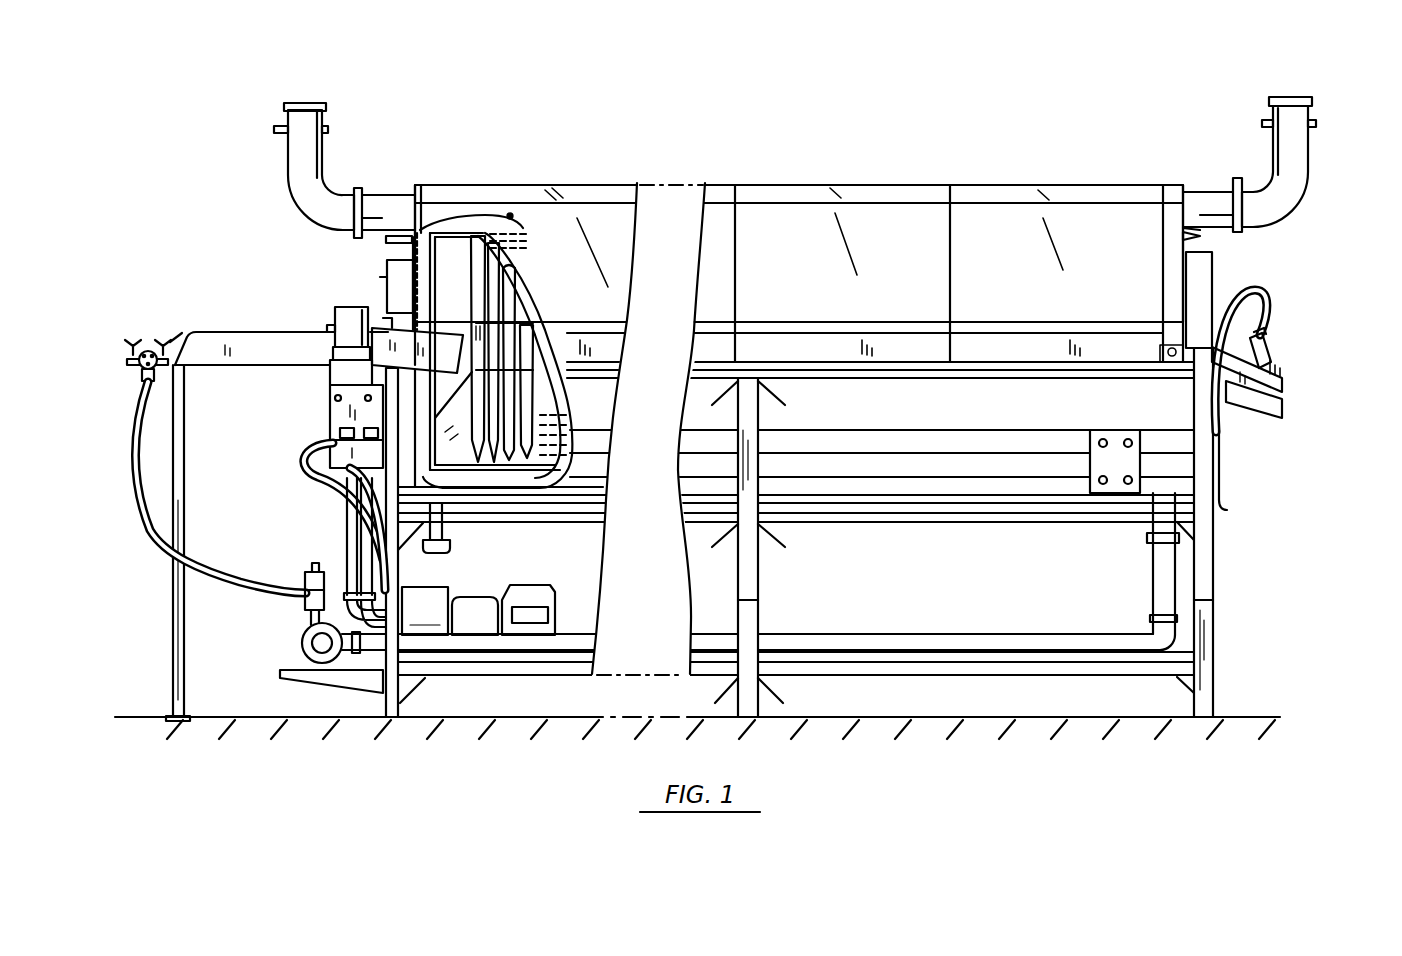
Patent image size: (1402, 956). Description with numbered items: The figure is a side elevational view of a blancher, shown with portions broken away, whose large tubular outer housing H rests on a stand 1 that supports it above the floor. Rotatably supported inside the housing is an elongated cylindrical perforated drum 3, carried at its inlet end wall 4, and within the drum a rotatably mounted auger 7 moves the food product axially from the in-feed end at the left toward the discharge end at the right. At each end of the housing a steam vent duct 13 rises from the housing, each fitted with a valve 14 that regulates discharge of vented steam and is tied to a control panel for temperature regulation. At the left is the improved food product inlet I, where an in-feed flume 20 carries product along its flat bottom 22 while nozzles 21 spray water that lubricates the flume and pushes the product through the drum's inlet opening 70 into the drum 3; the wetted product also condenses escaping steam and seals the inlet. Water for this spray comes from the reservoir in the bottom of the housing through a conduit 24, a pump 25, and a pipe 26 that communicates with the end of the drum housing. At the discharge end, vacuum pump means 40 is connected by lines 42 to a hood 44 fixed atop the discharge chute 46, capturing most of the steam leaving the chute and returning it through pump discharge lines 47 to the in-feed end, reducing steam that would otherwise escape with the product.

The stand 1 is at (795, 552).
The perforated drum 3 is at (512, 214).
The inlet end wall 4 is at (420, 266).
The auger 7 is at (468, 252).
The steam vent duct 13 is at (285, 167).
The valve 14 is at (281, 129).
The in-feed flume 20 is at (222, 330).
The nozzles 21 is at (164, 368).
The flat bottom 22 is at (256, 367).
The conduit 24 is at (246, 530).
The pump 25 is at (302, 642).
The pipe 26 is at (710, 637).
The vacuum pump means 40 is at (433, 586).
The lines 42 is at (1268, 290).
The hood 44 is at (1268, 355).
The discharge chute 46 is at (1284, 393).
The pump discharge lines 47 is at (346, 538).
The inlet opening 70 is at (470, 327).
The outer housing H is at (708, 183).
The food product inlet I is at (174, 334).